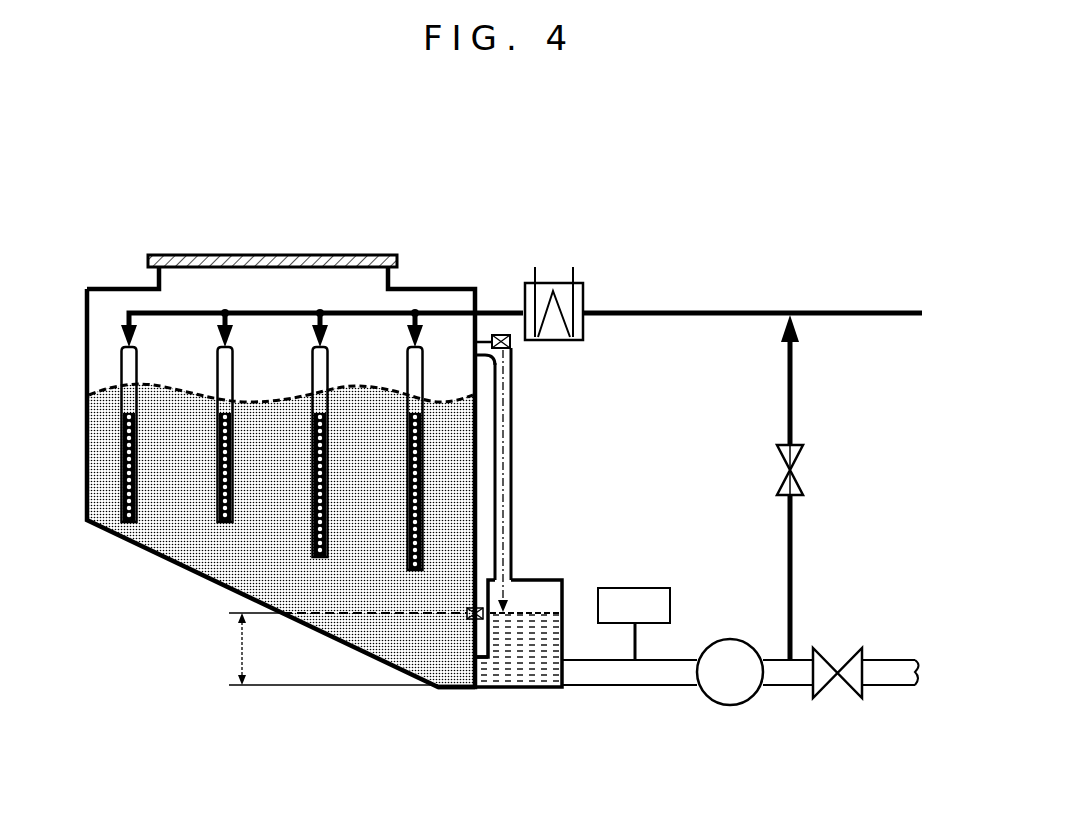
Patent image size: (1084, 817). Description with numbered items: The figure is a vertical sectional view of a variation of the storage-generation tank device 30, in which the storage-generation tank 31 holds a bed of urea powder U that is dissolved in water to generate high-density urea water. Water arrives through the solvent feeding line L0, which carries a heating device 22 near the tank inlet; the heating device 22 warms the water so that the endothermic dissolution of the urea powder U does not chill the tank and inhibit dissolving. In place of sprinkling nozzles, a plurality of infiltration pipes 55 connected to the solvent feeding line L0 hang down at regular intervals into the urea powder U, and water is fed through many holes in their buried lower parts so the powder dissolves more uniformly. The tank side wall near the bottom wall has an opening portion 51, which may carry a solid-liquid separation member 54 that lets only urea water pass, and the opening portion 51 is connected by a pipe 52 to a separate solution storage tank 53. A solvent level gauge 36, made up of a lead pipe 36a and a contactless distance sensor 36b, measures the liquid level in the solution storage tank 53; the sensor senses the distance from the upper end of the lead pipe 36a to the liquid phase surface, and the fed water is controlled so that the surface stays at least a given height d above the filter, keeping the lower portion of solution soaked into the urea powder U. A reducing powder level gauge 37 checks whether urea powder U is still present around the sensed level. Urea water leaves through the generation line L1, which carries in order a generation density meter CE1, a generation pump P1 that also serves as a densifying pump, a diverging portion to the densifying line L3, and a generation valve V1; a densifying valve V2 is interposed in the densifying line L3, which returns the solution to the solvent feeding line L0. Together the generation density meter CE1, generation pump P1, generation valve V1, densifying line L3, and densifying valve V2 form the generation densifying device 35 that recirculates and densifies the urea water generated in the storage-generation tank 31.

The storage-generation tank device 30 is at (475, 228).
The storage-generation tank 31 is at (111, 282).
The heating device 22 is at (552, 283).
The solvent feeding line L0 is at (698, 312).
The infiltration pipes 55 is at (130, 382).
The solvent level gauge 36 is at (548, 413).
The lead pipe 36a is at (512, 552).
The contactless distance sensor 36b is at (512, 342).
The reducing powder level gauge 37 is at (478, 560).
The solution storage tank 53 is at (547, 572).
The opening portion 51 is at (460, 689).
The pipe 52 is at (488, 689).
The solid-liquid separation member 54 is at (438, 690).
The urea powder U is at (280, 564).
The given height d is at (329, 649).
The generation density meter CE1 is at (634, 624).
The generation line L1 is at (630, 686).
The generation pump P1 is at (730, 672).
The generation valve V1 is at (825, 678).
The densifying line L3 is at (792, 567).
The generation densifying device 35 is at (823, 440).
The densifying valve V2 is at (790, 457).